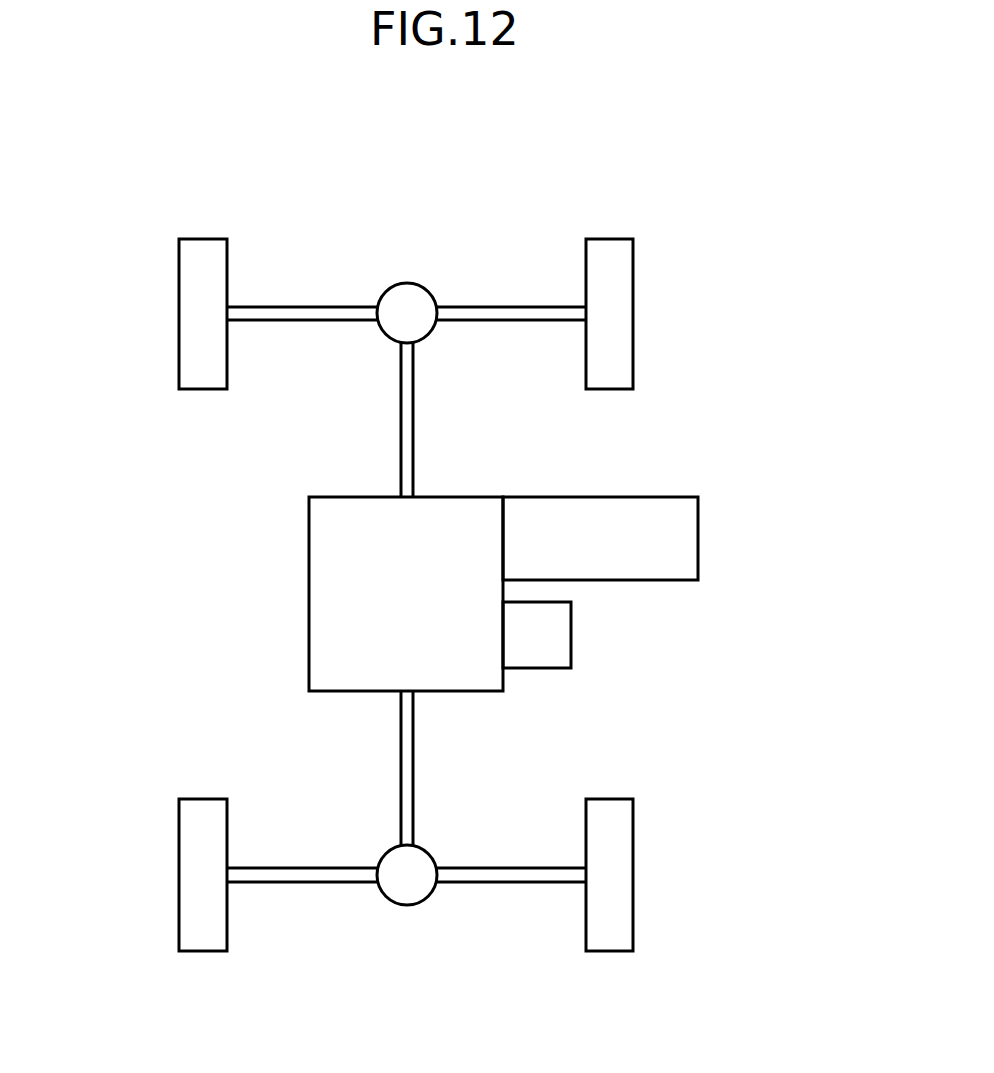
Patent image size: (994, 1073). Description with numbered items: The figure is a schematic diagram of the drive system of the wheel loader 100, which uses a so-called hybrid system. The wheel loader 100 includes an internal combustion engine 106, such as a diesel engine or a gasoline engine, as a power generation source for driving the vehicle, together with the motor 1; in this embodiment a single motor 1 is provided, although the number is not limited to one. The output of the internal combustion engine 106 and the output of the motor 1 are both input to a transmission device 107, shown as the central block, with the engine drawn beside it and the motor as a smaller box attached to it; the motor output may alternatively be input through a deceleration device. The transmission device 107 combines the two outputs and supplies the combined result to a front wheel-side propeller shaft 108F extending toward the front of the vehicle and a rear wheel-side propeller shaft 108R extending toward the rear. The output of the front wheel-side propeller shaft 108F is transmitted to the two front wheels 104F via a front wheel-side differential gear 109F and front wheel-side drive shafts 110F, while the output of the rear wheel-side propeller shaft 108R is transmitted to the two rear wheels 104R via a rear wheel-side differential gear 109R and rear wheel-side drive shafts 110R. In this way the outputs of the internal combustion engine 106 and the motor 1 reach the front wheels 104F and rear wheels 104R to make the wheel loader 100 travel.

The wheel loader 100 is at (641, 160).
The rear wheels 104R is at (178, 315).
The front wheels 104F is at (178, 869).
The rear wheel-side drive shafts 110R is at (303, 306).
The front wheel-side drive shafts 110F is at (307, 883).
The rear wheel-side differential gear 109R is at (405, 282).
The front wheel-side differential gear 109F is at (407, 906).
The rear wheel-side propeller shaft 108R is at (414, 412).
The front wheel-side propeller shaft 108F is at (414, 767).
The transmission device 107 is at (308, 537).
The internal combustion engine 106 is at (699, 540).
The motor 1 is at (572, 636).